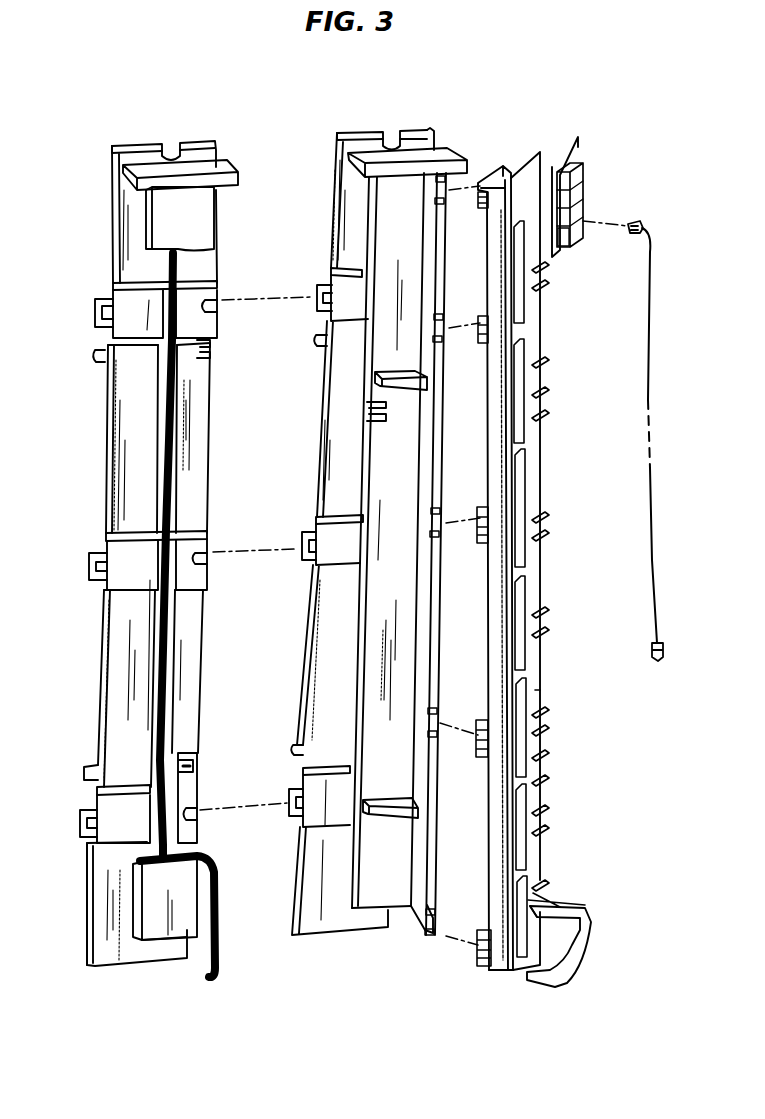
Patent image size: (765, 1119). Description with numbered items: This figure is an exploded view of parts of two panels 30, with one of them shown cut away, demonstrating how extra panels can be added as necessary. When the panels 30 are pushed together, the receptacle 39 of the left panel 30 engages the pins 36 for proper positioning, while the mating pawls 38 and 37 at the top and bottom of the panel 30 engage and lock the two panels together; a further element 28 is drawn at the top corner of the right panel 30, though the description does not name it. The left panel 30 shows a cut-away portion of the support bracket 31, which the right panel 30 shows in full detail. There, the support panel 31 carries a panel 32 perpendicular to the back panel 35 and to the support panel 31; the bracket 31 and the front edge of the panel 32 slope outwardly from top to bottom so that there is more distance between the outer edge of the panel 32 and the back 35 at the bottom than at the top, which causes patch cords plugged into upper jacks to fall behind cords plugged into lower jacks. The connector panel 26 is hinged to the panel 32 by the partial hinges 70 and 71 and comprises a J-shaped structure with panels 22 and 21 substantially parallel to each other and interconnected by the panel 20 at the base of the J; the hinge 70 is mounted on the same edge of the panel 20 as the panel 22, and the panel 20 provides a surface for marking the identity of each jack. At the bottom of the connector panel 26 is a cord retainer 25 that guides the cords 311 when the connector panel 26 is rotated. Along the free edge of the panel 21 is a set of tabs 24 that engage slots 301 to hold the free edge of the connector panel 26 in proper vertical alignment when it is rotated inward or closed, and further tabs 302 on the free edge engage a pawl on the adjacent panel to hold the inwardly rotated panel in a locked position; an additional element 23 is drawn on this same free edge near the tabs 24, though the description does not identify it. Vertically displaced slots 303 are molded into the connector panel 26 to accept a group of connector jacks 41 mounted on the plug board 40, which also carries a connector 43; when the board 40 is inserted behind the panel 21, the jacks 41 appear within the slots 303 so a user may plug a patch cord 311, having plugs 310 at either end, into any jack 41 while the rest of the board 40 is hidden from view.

The panel 20 is at (497, 293).
The panel 21 is at (533, 303).
The panel 22 is at (513, 173).
The tab 23 is at (543, 400).
The tabs 24 is at (543, 363).
The cord retainer 25 is at (587, 910).
The connector panel 26 is at (537, 685).
The projection 28 is at (432, 130).
The panel 30 is at (168, 150).
The support bracket 31 is at (185, 227).
The panel 32 is at (207, 950).
The back panel 35 is at (102, 963).
The pins 36 is at (83, 831).
The pawl 37 is at (83, 770).
The pawl 38 is at (193, 762).
The receptacle 39 is at (197, 827).
The plug board 40 is at (573, 147).
The jacks 41 is at (563, 240).
The connector 43 is at (582, 190).
The partial hinge 70 is at (488, 755).
The partial hinge 71 is at (440, 717).
The slots 301 is at (387, 810).
The tabs 302 is at (543, 425).
The slots 303 is at (517, 495).
The plug 310 is at (653, 648).
The patch cord 311 is at (653, 578).